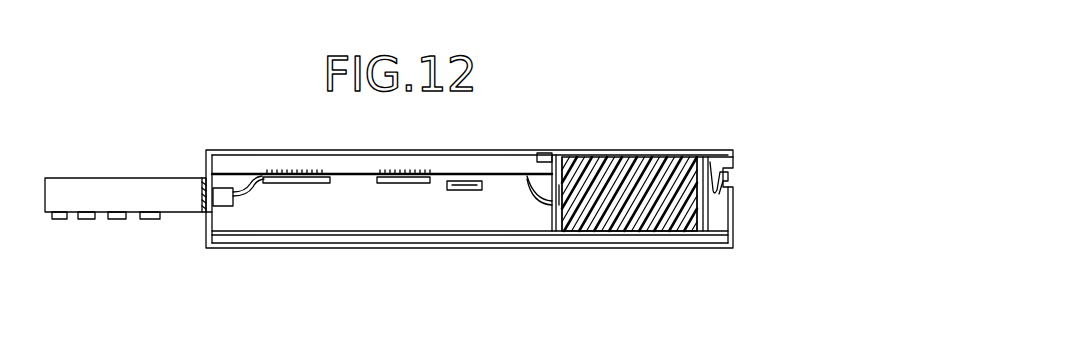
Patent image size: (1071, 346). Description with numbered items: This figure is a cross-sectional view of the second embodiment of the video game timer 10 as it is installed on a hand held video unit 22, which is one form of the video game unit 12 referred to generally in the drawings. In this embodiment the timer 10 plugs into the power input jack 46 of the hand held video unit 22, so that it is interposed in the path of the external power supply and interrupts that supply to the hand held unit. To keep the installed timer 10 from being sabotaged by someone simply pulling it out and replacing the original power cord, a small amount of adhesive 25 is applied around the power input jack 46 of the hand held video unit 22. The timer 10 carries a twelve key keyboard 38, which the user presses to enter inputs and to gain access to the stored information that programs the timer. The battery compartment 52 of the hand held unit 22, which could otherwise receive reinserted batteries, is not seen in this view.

The video game timer 10 is at (144, 138).
The video game unit 12 is at (587, 116).
The hand held video unit 22 is at (541, 151).
The adhesive 25 is at (215, 208).
The twelve key keyboard 38 is at (117, 222).
The power input jack 46 is at (222, 193).
The battery compartment 52 is at (418, 221).